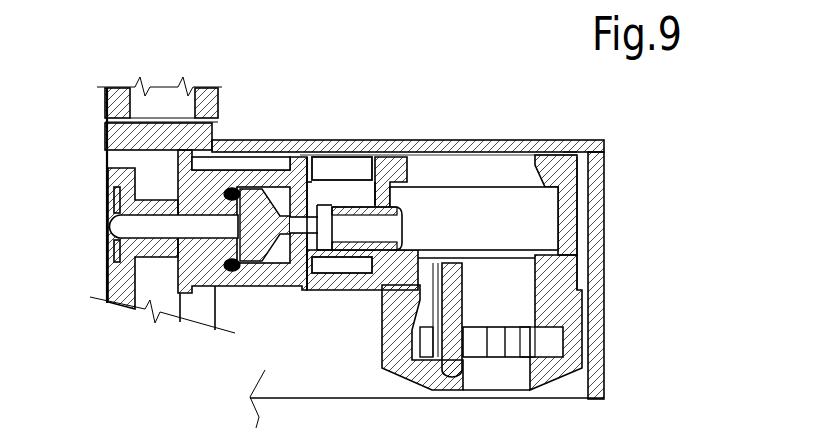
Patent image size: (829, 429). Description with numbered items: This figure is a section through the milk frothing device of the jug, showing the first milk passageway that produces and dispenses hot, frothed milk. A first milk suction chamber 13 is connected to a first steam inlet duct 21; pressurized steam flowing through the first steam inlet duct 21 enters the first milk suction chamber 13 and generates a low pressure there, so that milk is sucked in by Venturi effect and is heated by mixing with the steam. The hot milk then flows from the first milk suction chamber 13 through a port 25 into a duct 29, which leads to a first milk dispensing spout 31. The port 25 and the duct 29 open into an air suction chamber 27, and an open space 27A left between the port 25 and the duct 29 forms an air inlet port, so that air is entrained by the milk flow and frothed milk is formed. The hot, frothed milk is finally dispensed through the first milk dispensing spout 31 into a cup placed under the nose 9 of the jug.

The nose 9 is at (650, 210).
The first milk suction chamber 13 is at (273, 260).
The first steam inlet duct 21 is at (160, 228).
The port 25 is at (305, 230).
The air suction chamber 27 is at (343, 178).
The open space 27A is at (323, 237).
The duct 29 is at (375, 223).
The first milk dispensing spout 31 is at (522, 282).